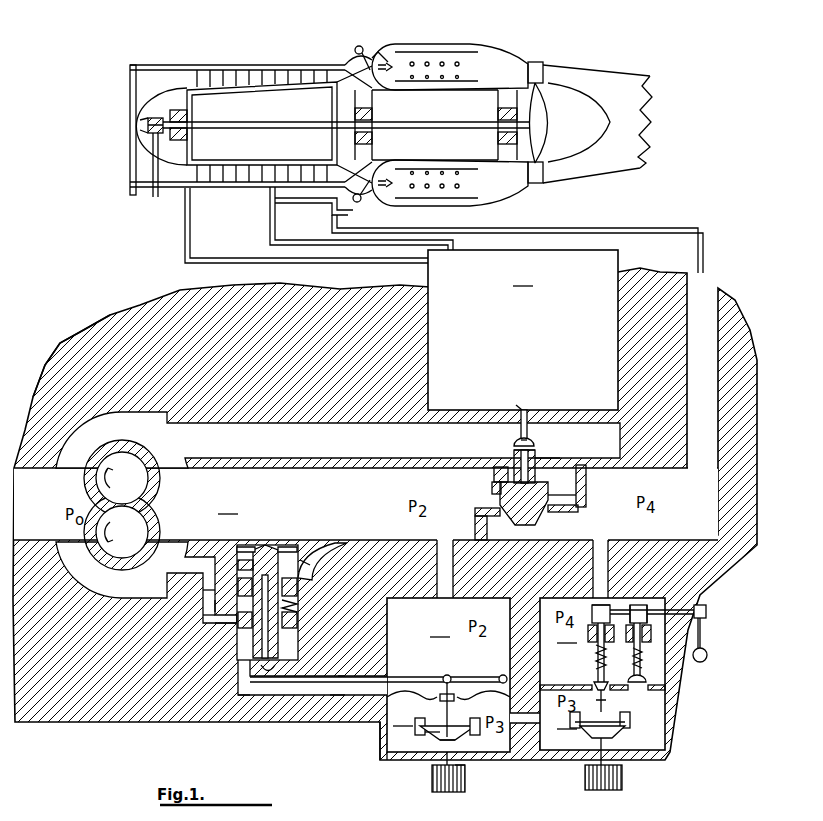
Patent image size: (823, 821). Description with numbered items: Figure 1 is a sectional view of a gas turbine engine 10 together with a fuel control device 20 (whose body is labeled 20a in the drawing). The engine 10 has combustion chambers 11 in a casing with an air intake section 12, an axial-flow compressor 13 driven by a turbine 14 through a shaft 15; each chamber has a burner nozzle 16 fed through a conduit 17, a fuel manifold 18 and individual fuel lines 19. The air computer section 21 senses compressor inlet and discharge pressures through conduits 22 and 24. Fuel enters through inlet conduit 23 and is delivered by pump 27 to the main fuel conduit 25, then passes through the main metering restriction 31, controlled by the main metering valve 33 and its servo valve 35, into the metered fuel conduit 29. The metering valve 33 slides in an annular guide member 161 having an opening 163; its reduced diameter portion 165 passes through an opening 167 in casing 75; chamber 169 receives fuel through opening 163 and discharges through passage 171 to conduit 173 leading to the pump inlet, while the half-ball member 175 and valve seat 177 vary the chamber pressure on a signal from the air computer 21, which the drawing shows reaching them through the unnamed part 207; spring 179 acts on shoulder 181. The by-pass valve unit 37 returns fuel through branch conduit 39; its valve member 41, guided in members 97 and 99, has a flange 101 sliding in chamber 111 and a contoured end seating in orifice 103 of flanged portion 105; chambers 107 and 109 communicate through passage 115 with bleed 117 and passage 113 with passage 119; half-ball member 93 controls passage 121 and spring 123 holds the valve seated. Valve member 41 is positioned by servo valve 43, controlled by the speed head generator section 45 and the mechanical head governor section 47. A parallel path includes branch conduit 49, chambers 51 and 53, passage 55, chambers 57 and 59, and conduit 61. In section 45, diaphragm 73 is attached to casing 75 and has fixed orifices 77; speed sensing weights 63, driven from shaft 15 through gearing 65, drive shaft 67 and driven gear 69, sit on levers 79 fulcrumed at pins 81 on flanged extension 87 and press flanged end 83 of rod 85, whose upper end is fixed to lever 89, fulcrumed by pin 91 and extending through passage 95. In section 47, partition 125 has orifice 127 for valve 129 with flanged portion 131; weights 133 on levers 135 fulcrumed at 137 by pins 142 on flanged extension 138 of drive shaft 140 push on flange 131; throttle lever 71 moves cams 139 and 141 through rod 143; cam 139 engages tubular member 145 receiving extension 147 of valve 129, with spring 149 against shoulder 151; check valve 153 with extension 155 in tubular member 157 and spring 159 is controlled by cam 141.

The gas turbine engine 10 is at (452, 40).
The combustion chambers 11 is at (404, 48).
The header or air intake section 12 is at (381, 50).
The dynamic compressor 13 is at (280, 94).
The turbine 14 is at (556, 70).
The shaft 15 is at (443, 121).
The burner nozzle 16 is at (398, 207).
The conduit 17 is at (332, 227).
The fuel manifold 18 is at (354, 50).
The individual fuel lines 19 is at (368, 205).
The fuel control device 20 is at (186, 300).
The body housing 20a is at (57, 345).
The air computer section 21 is at (516, 410).
The conduit 22 is at (185, 229).
The inlet conduit 23 is at (50, 524).
The conduit 24 is at (270, 229).
The main fuel conduit 25 is at (258, 578).
The pump 27 is at (168, 490).
The metered fuel conduit 29 is at (712, 379).
The main metering restriction 31 is at (540, 520).
The main metering valve 33 is at (490, 528).
The servo valve 35 is at (534, 440).
The by-pass valve unit 37 is at (322, 558).
The branch conduit 39 is at (192, 556).
The valve member 41 is at (270, 548).
The servo valve 43 is at (240, 695).
The speed head generator section 45 is at (390, 748).
The mechanical head governor section 47 is at (682, 732).
The branch conduit 49 is at (443, 588).
The variable volume chamber 51 is at (448, 618).
The variable volume chamber 53 is at (400, 725).
The passage 55 is at (522, 760).
The chamber 57 is at (559, 724).
The chamber 59 is at (580, 656).
The conduit 61 is at (612, 536).
The engine driven speed sensing weights 63 is at (388, 760).
The gearing arrangement 65 is at (148, 124).
The drive shaft 67 is at (458, 766).
The driven gear 69 is at (447, 793).
The pilot controlled throttle lever 71 is at (705, 640).
The diaphragm 73 is at (378, 722).
The casing 75 is at (340, 700).
The fixed orifices 77 is at (438, 696).
The levers 79 is at (425, 740).
The fulcrum pins 81 is at (468, 718).
The flanged end 83 is at (428, 720).
The rod 85 is at (455, 697).
The flanged extension 87 is at (432, 762).
The lever 89 is at (447, 675).
The pin 91 is at (503, 674).
The half-ball member 93 is at (245, 696).
The passage 95 is at (335, 722).
The annular valve guide member 97 is at (333, 552).
The annular valve guide member 99 is at (300, 677).
The flanged portion 101 is at (296, 600).
The orifice 103 is at (257, 545).
The flanged portion 105 is at (296, 546).
The variable volume chamber 107 is at (240, 578).
The variable volume chamber 109 is at (297, 628).
The chamber 111 is at (250, 662).
The passage 113 is at (232, 638).
The passage 115 is at (204, 604).
The bleed 117 is at (204, 589).
The passage 119 is at (203, 622).
The passage 121 is at (276, 667).
The spring 123 is at (297, 615).
The partition 125 is at (665, 700).
The orifice 127 is at (606, 706).
The valve 129 is at (600, 680).
The flanged portion 131 is at (605, 718).
The weights 133 is at (630, 724).
The levers 135 is at (572, 742).
The fulcrum 137 is at (640, 742).
The flanged extension 138 is at (592, 768).
The cam 139 is at (636, 603).
The drive shaft 140 is at (604, 770).
The cam 141 is at (662, 598).
The fulcrum pins 142 is at (526, 725).
The rod 143 is at (700, 600).
The tubular member 145 is at (594, 614).
The extended portion 147 is at (590, 636).
The spring 149 is at (640, 670).
The shoulder 151 is at (594, 656).
The check valve 153 is at (645, 687).
The reduced diameter extension 155 is at (646, 674).
The tubular member 157 is at (707, 613).
The spring 159 is at (708, 655).
The annular guide member 161 is at (587, 478).
The opening 163 is at (494, 475).
The reduced diameter portion 165 is at (560, 462).
The opening 167 is at (514, 460).
The variable volume chamber 169 is at (495, 492).
The passage 171 is at (576, 496).
The conduit 173 is at (312, 455).
The half-ball member 175 is at (532, 428).
The valve seat 177 is at (514, 452).
The spring 179 is at (476, 518).
The shoulder 181 is at (580, 509).
The output shaft 207 is at (516, 410).